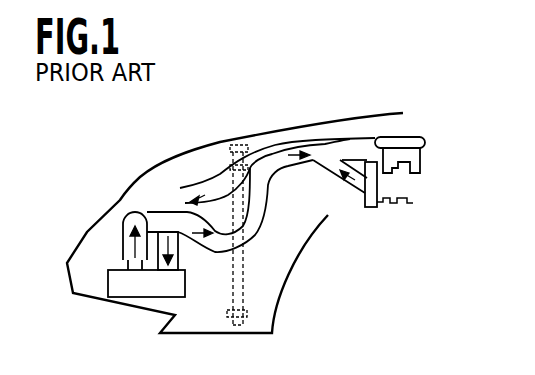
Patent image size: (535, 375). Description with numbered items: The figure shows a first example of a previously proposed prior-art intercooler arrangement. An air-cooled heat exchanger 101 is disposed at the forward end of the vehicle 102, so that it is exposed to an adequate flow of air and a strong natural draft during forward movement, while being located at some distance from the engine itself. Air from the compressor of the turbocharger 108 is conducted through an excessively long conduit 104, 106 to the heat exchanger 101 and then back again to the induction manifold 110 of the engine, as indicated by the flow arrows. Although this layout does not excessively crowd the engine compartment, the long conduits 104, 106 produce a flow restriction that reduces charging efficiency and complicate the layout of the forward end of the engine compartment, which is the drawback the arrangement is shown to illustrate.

The air-cooled heat exchanger 101 is at (125, 288).
The vehicle 102 is at (118, 200).
The conduit 104 is at (200, 185).
The conduit 106 is at (252, 230).
The turbocharger 108 is at (402, 190).
The induction manifold 110 is at (420, 162).